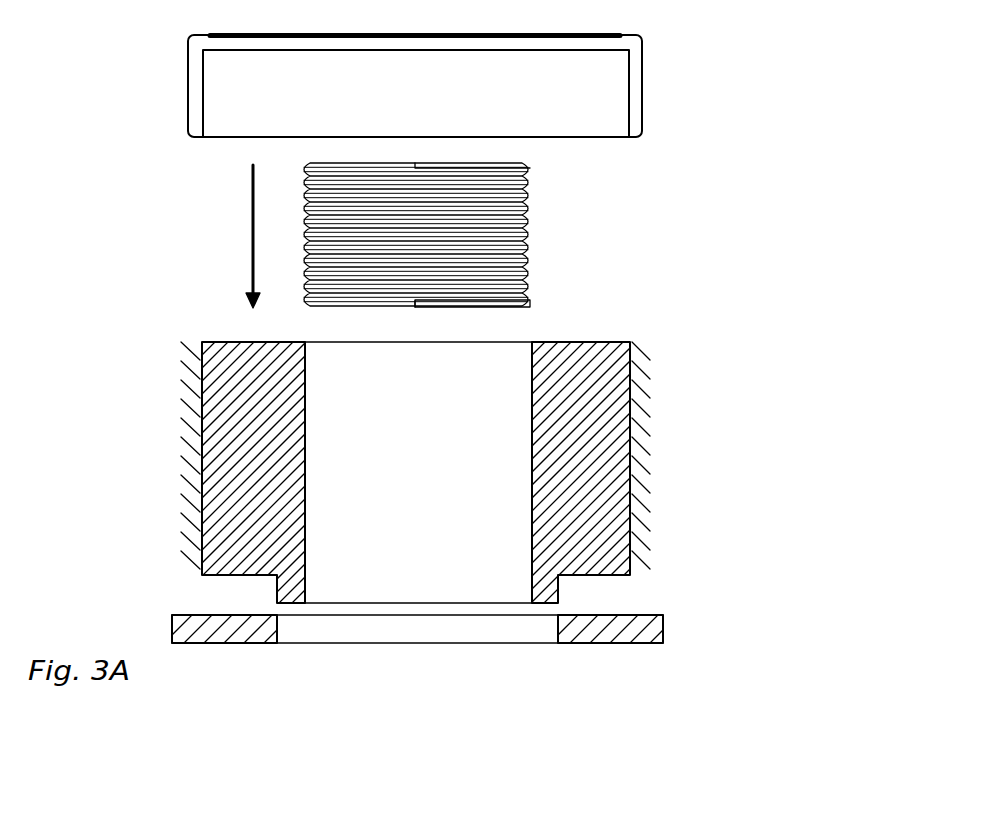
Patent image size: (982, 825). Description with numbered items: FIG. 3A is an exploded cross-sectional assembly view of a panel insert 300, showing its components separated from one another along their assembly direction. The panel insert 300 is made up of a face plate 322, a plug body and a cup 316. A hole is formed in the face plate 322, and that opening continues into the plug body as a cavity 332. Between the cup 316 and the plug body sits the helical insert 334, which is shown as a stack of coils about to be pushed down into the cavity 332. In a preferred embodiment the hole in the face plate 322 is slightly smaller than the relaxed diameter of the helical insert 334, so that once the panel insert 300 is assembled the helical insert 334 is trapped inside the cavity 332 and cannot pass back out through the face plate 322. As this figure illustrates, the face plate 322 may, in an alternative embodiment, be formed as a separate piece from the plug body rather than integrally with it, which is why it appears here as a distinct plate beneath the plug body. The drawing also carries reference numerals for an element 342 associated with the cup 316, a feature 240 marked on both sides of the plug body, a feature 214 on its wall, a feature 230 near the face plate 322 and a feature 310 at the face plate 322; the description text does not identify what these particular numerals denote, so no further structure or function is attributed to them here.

The panel insert 300 is at (126, 222).
The cup 316 is at (645, 88).
The cap inner rim 342 is at (627, 123).
The helical insert 334 is at (531, 254).
The threaded housing 240 is at (144, 442).
The housing wall 214 is at (623, 430).
The cavity 332 is at (384, 578).
The base plate 230 is at (322, 657).
The base flange 310 is at (640, 614).
The face plate 322 is at (628, 650).